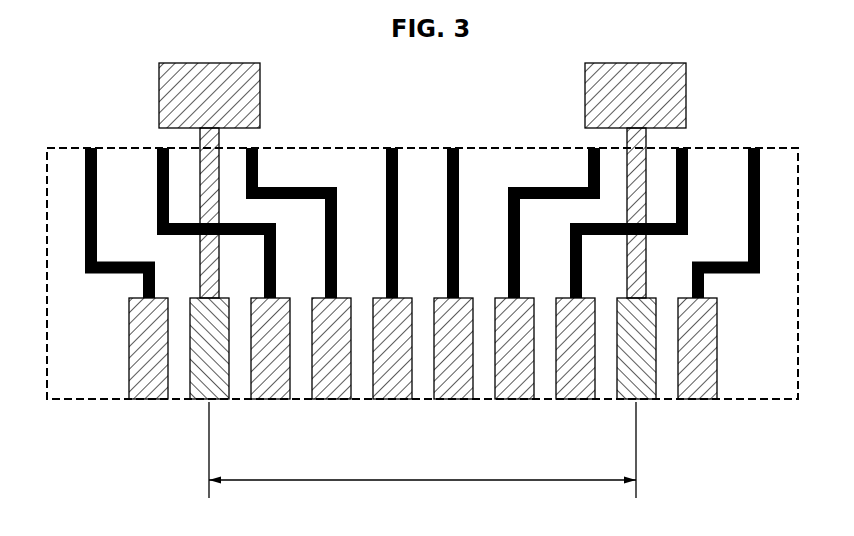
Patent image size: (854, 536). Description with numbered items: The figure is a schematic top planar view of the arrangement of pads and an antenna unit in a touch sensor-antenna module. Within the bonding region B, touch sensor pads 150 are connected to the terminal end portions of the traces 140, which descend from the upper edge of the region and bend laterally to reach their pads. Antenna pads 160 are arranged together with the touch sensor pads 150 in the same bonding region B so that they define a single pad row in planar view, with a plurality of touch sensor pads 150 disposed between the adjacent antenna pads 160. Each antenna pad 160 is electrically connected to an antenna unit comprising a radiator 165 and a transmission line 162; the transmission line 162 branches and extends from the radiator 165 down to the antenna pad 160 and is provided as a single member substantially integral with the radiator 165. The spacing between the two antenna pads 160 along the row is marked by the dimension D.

The traces 140 is at (460, 168).
The touch sensor pads 150 is at (327, 400).
The antenna pads 160 is at (198, 400).
The transmission line 162 is at (645, 175).
The radiator 165 is at (673, 82).
The bonding region B is at (752, 400).
The distance between test pads D is at (422, 450).